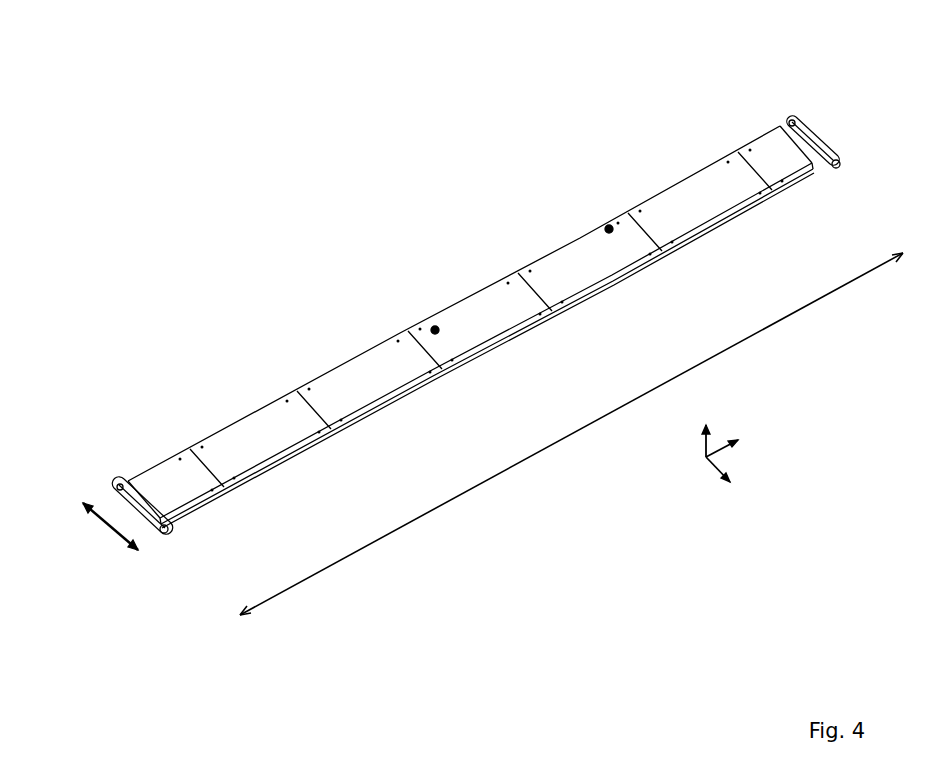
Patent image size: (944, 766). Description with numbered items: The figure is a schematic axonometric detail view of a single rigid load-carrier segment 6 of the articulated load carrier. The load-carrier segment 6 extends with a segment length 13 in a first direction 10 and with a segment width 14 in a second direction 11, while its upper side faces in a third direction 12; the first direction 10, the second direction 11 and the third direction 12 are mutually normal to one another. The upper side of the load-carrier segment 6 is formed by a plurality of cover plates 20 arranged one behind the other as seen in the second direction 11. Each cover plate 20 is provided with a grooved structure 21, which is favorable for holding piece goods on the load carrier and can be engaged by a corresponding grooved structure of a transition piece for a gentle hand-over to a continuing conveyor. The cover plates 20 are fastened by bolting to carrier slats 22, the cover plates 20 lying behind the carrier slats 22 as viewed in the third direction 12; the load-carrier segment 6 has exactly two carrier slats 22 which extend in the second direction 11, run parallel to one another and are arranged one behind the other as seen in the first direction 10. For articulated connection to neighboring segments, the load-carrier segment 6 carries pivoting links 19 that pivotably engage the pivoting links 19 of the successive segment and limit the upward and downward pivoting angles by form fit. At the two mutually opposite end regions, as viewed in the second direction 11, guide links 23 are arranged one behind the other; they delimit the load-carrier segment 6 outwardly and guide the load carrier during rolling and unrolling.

The load-carrier segment 6 is at (712, 121).
The first direction 10 is at (718, 472).
The second direction 11 is at (727, 450).
The third direction 12 is at (702, 444).
The segment length 13 is at (110, 529).
The segment width 14 is at (430, 514).
The pivoting link 19 is at (168, 533).
The cover plate 20 is at (483, 302).
The grooved structure 21 is at (435, 326).
The carrier slat 22 is at (400, 400).
The guide link 23 is at (115, 487).